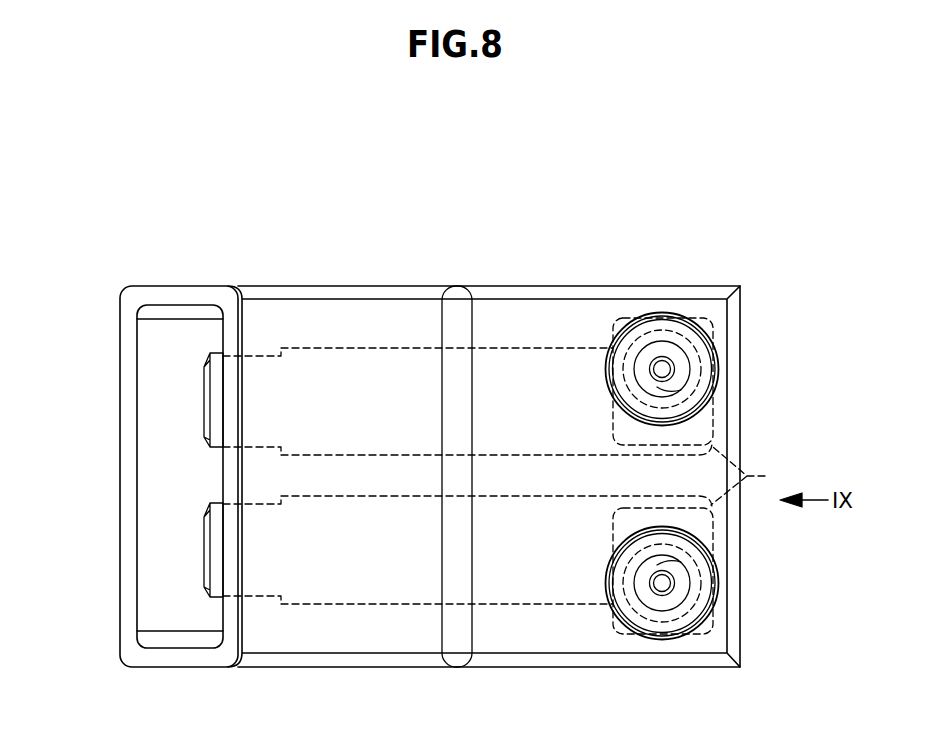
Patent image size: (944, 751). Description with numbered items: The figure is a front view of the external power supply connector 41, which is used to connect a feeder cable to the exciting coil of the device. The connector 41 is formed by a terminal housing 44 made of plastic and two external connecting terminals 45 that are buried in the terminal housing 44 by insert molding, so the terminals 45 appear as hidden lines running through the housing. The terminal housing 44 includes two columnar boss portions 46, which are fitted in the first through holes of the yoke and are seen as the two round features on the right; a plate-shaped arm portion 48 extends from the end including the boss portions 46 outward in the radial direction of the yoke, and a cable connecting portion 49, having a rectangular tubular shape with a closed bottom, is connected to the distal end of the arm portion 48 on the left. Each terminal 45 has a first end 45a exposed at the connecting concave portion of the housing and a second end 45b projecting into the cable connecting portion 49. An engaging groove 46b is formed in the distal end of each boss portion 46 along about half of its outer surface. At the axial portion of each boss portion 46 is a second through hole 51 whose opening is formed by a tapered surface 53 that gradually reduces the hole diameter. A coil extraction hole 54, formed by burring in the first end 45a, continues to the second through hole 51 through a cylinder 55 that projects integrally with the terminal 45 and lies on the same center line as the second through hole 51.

The external power supply connector 41 is at (330, 272).
The terminal housing 44 is at (270, 285).
The external connecting terminal 45 is at (412, 348).
The first end 45a is at (757, 476).
The second end 45b is at (206, 397).
The boss portion 46 is at (606, 377).
The engaging groove 46b is at (713, 318).
The arm portion 48 is at (503, 322).
The cable connecting portion 49 is at (120, 405).
The second through hole 51 is at (670, 373).
The tapered surface 53 is at (677, 390).
The coil extraction hole 54 is at (652, 358).
The cylinder 55 is at (677, 357).